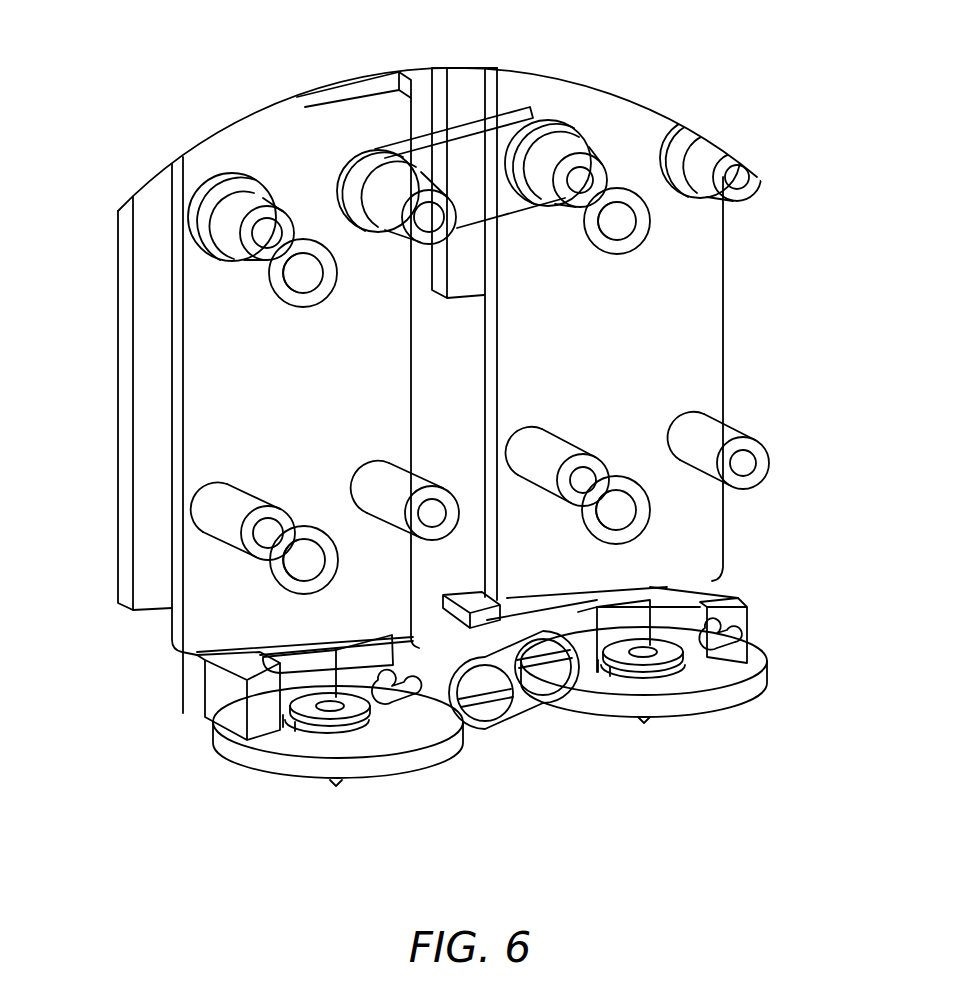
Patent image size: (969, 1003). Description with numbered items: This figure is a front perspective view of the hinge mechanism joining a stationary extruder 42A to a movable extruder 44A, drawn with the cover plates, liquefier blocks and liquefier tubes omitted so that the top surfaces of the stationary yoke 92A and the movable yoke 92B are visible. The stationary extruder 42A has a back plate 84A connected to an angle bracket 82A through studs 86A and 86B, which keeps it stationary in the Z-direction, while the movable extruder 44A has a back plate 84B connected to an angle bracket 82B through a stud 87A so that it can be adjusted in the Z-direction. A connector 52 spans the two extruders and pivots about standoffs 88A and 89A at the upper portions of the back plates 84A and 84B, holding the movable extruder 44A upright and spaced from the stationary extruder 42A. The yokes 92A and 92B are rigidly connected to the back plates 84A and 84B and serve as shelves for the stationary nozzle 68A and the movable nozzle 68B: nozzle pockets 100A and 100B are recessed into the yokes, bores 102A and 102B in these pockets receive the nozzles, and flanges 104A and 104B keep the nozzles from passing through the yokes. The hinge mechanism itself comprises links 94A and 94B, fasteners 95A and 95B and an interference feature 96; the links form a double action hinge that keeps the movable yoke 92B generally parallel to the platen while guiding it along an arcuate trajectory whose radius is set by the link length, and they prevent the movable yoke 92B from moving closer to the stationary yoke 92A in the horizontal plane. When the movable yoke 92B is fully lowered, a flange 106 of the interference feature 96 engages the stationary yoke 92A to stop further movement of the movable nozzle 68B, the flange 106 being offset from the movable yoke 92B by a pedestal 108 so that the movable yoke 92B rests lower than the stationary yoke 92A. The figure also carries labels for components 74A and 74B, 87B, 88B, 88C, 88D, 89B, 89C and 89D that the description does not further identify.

The stationary extruder 42A is at (104, 344).
The movable extruder 44A is at (752, 300).
The connector 52 is at (460, 176).
The stationary nozzle 68A is at (323, 720).
The movable nozzle 68B is at (657, 667).
The base disc 74A is at (230, 753).
The base disc 74B is at (765, 684).
The angle bracket 82A is at (154, 319).
The angle bracket 82B is at (456, 278).
The back plate 84A is at (342, 353).
The back plate 84B is at (656, 300).
The stud 86A is at (280, 285).
The stud 86B is at (277, 577).
The stud 87A is at (630, 221).
The ring spacer 87B is at (647, 503).
The standoff 88A is at (397, 197).
The cylindrical boss 88B is at (238, 202).
The cylindrical boss 88C is at (203, 511).
The cylindrical boss 88D is at (370, 487).
The standoff 89A is at (560, 150).
The cylindrical boss 89B is at (703, 150).
The cylindrical boss 89C is at (740, 435).
The cylindrical boss 89D is at (563, 450).
The stationary yoke 92A is at (213, 720).
The movable yoke 92B is at (740, 628).
The link 94A is at (522, 703).
The link 94B is at (420, 597).
The fastener 95A is at (492, 715).
The fastener 95B is at (553, 690).
The interference feature 96 is at (468, 572).
The nozzle pocket 100A is at (205, 675).
The nozzle pocket 100B is at (680, 610).
The bore 102A is at (347, 725).
The bore 102B is at (670, 673).
The flange 104A is at (272, 720).
The flange 104B is at (627, 647).
The flange 106 is at (477, 598).
The pedestal 108 is at (548, 595).